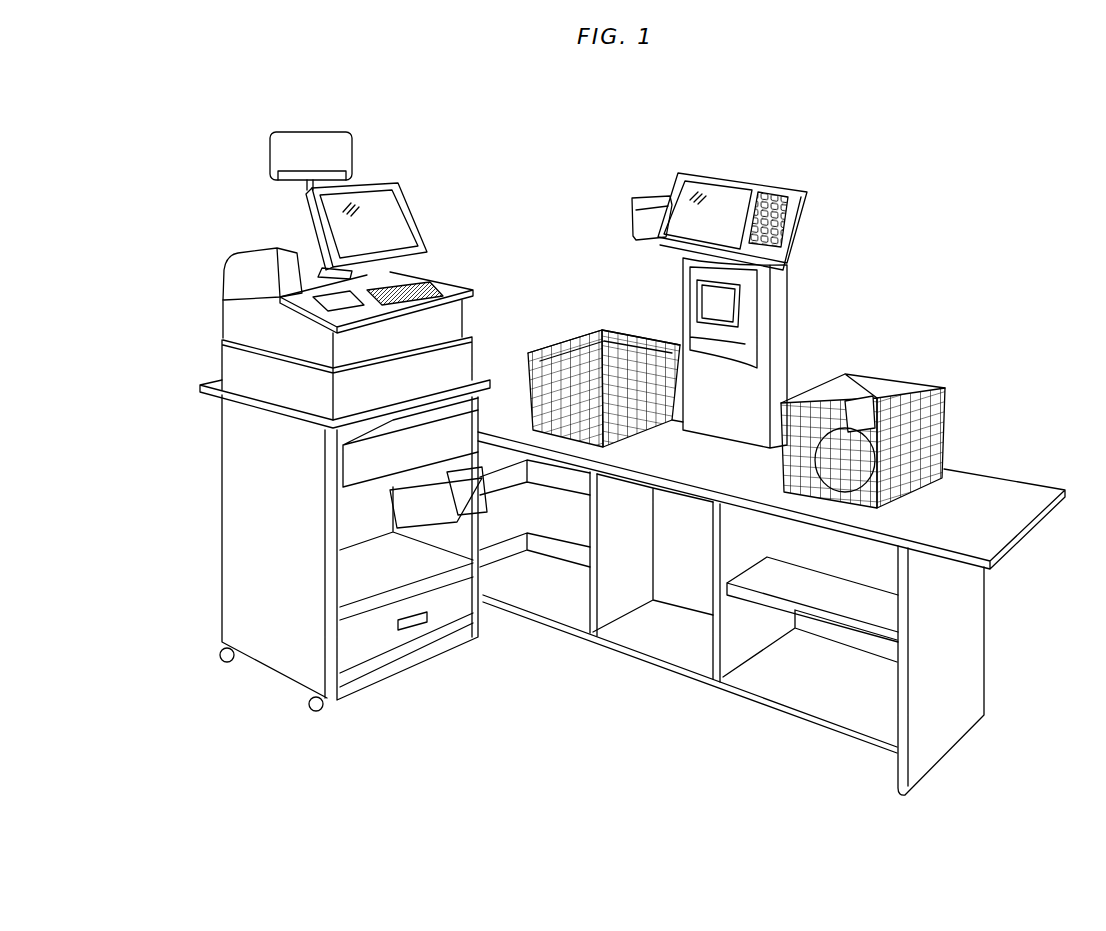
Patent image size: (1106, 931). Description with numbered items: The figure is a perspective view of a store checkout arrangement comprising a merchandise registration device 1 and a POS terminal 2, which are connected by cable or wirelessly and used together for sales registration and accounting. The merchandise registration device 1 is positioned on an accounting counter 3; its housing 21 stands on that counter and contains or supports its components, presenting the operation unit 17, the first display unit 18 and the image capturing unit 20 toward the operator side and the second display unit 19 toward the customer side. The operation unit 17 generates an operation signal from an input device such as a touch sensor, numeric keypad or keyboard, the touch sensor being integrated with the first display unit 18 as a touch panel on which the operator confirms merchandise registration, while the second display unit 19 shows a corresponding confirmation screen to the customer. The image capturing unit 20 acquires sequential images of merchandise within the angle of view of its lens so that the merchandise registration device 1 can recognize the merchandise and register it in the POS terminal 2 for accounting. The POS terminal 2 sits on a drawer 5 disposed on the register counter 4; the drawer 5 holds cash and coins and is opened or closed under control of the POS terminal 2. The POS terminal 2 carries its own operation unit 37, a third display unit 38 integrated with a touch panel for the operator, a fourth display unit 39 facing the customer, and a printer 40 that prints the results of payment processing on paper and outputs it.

The merchandise registration device 1 is at (868, 234).
The POS terminal 2 is at (240, 137).
The accounting counter 3 is at (988, 489).
The register counter 4 is at (230, 540).
The drawer 5 is at (230, 370).
The operation unit 17 is at (778, 193).
The first display unit 18 is at (700, 190).
The second display unit 19 is at (645, 198).
The image capturing unit 20 is at (727, 307).
The housing 21 is at (778, 358).
The operation unit 37 is at (433, 284).
The third display unit 38 is at (393, 211).
The fourth display unit 39 is at (341, 155).
The printer 40 is at (277, 253).